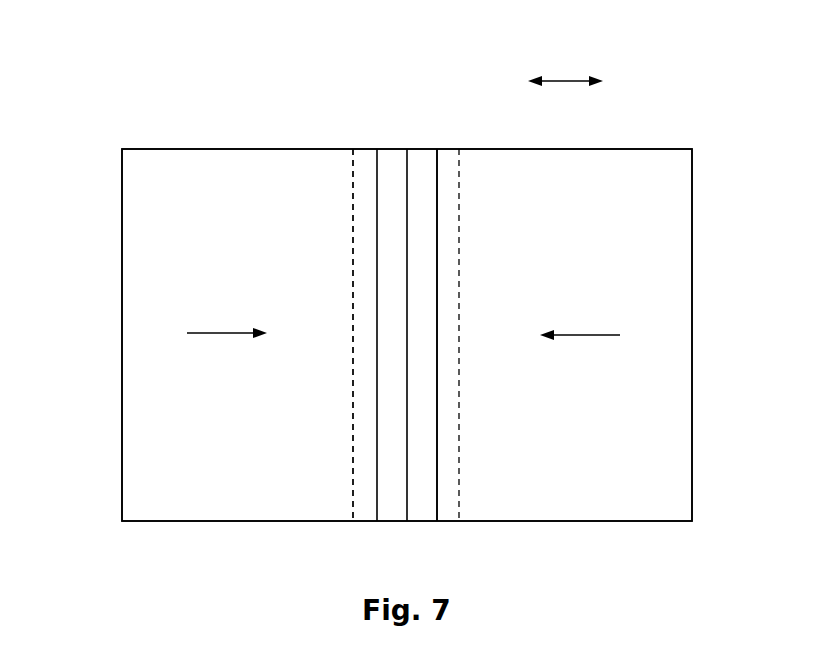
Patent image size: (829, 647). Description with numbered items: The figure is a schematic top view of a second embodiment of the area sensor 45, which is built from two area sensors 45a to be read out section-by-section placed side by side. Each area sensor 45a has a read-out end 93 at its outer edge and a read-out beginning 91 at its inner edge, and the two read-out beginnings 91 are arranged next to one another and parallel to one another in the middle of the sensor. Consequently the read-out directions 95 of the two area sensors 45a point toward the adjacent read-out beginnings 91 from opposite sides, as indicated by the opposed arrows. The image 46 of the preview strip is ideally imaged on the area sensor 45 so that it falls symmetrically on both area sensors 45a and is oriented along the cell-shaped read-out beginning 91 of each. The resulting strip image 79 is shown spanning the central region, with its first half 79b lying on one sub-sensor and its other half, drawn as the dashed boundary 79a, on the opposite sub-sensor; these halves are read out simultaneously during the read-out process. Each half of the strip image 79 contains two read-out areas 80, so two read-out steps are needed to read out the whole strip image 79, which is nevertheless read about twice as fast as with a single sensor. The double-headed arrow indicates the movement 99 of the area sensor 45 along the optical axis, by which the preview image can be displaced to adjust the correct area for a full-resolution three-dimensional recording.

The area sensor 45 is at (390, 63).
The area sensor to be read out section-by-section 45a is at (226, 161).
The strip image 79 is at (362, 175).
The first fold line 79a is at (367, 513).
The first half 79b is at (443, 513).
The read-out area 80 is at (362, 177).
The read-out beginning 91 is at (420, 278).
The image 46 is at (457, 460).
The read-out direction 95 is at (215, 333).
The read-out end 93 is at (96, 329).
The movement 99 is at (565, 80).